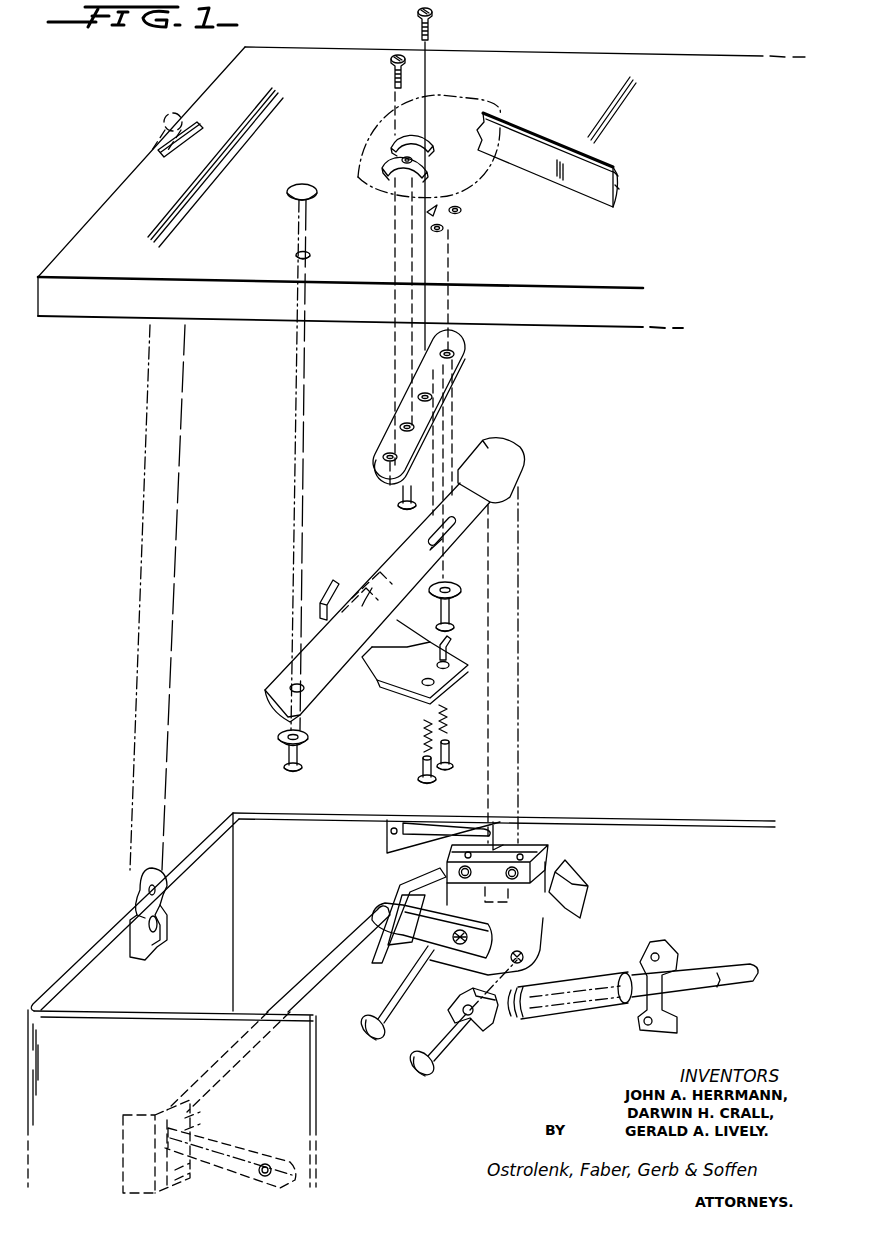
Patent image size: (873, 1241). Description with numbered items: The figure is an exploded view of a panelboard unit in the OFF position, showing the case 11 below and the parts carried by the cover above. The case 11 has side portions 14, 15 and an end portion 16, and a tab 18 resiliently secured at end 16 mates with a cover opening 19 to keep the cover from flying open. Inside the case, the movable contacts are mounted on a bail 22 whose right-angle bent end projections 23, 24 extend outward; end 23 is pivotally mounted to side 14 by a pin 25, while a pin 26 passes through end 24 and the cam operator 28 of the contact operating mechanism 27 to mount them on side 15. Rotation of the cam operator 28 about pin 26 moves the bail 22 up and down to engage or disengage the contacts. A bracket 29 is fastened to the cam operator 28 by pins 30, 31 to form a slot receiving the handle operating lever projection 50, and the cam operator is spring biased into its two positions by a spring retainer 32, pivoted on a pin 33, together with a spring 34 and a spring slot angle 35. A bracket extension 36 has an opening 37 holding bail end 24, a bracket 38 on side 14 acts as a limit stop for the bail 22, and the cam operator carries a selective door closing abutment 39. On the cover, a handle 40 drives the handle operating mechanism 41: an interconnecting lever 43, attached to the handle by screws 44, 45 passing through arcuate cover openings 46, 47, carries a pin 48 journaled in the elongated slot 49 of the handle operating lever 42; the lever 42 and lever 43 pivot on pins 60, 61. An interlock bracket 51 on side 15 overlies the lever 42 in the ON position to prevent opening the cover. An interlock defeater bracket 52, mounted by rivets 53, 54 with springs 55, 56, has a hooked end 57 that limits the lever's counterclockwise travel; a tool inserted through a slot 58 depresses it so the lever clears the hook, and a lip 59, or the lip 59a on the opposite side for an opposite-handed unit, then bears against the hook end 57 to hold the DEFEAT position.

The case 11 is at (401, 1000).
The side portion 14 is at (172, 1098).
The side portion 15 is at (504, 837).
The end portion 16 is at (135, 912).
The tab 18 is at (127, 914).
The cover opening 19 is at (177, 106).
The bail 22 is at (278, 1009).
The end projection 23 is at (230, 1147).
The end projection 24 is at (432, 944).
The pin 25 is at (241, 1135).
The pin 26 is at (384, 994).
The contact operating mechanism 27 is at (546, 958).
The cam operator 28 is at (503, 918).
The bracket 29 is at (523, 860).
The pin 30 is at (524, 890).
The pin 31 is at (453, 889).
The spring retainer 32 is at (494, 1024).
The pin 33 is at (461, 1019).
The spring 34 is at (633, 987).
The spring slot angle 35 is at (677, 978).
The bracket extension 36 is at (409, 909).
The opening 37 is at (384, 908).
The bracket 38 is at (129, 1142).
The selective door closing abutment 39 is at (580, 889).
The handle 40 is at (548, 153).
The handle operating mechanism 41 is at (403, 580).
The handle operating lever 42 is at (369, 602).
The interconnecting lever 43 is at (434, 407).
The screw 44 is at (376, 71).
The screw 45 is at (396, 24).
The arcuate cover opening 46 is at (377, 183).
The arcuate cover opening 47 is at (422, 136).
The pin 48 is at (458, 607).
The elongated slot 49 is at (412, 532).
The handle operating lever projection 50 is at (511, 470).
The interlock bracket 51 is at (445, 815).
The interlock defeater bracket 52 is at (403, 665).
The rivet 53 is at (400, 771).
The rivet 54 is at (459, 752).
The spring 55 is at (405, 731).
The spring 56 is at (460, 714).
The hooked end 57 is at (294, 591).
The slot 58 is at (407, 219).
The lip 59 is at (345, 576).
The lip 59a is at (465, 647).
The pin 60 is at (272, 752).
The pin 61 is at (377, 495).